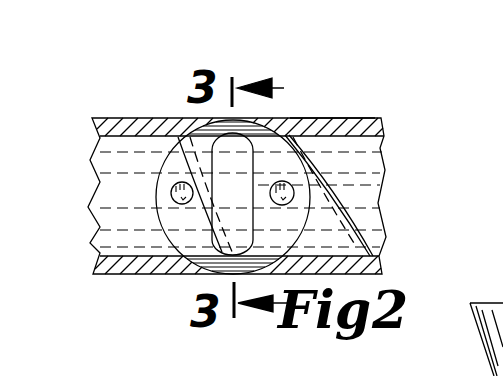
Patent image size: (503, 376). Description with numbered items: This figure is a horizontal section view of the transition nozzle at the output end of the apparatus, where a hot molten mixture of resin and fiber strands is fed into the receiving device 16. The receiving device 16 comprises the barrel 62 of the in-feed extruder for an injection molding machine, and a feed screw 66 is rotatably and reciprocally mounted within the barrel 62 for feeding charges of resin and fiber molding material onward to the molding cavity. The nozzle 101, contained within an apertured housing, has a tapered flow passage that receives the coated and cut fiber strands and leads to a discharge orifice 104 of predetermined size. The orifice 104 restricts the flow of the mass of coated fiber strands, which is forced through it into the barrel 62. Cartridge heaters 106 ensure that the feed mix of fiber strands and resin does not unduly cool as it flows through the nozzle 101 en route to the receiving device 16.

The receiving device 16 is at (353, 118).
The barrel 62 is at (316, 118).
The feed screw 66 is at (328, 172).
The nozzle 101 is at (159, 233).
The discharge orifice 104 is at (222, 140).
The cartridge heaters 106 is at (176, 200).